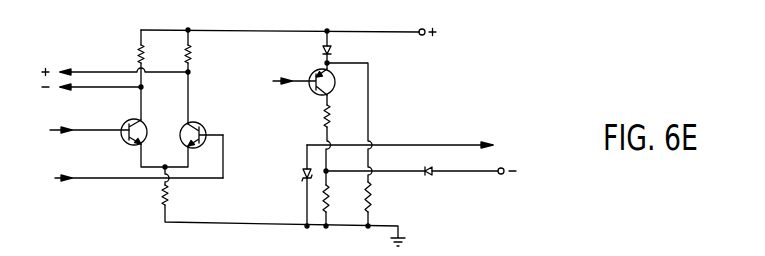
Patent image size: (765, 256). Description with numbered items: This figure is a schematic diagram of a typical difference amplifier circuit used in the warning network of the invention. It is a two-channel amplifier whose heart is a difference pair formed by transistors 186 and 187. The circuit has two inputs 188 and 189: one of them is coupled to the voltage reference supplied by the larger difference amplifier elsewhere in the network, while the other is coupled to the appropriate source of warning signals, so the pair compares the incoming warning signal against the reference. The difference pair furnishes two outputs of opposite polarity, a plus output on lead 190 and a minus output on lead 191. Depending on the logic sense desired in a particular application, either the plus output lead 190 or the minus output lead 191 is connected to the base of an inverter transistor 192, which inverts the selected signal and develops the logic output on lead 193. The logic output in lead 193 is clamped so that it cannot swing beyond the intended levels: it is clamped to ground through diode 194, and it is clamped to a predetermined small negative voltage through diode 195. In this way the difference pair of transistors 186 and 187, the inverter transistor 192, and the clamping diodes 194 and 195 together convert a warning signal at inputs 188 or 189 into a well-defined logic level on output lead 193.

The transistor 186 is at (123, 136).
The transistor 187 is at (202, 125).
The input 188 is at (88, 132).
The input 189 is at (118, 178).
The plus output lead 190 is at (121, 88).
The minus output lead 191 is at (103, 70).
The inverter transistor 192 is at (320, 93).
The logic output lead 193 is at (447, 142).
The diode 194 is at (303, 177).
The diode 195 is at (428, 180).